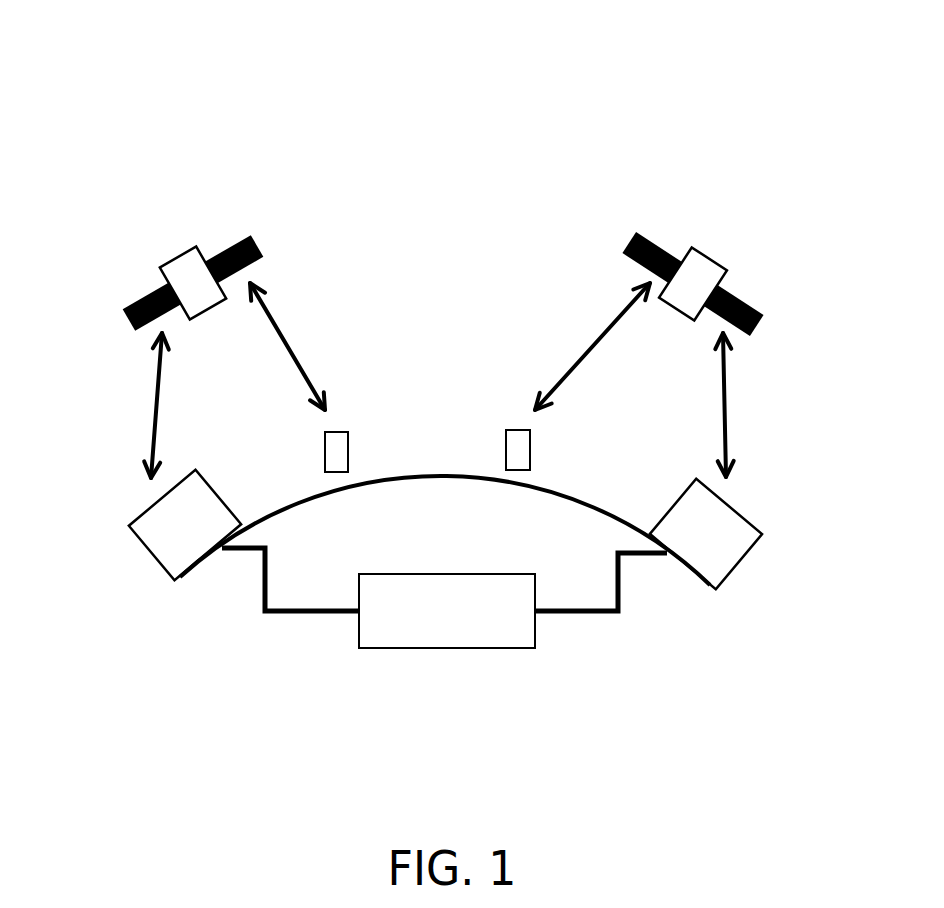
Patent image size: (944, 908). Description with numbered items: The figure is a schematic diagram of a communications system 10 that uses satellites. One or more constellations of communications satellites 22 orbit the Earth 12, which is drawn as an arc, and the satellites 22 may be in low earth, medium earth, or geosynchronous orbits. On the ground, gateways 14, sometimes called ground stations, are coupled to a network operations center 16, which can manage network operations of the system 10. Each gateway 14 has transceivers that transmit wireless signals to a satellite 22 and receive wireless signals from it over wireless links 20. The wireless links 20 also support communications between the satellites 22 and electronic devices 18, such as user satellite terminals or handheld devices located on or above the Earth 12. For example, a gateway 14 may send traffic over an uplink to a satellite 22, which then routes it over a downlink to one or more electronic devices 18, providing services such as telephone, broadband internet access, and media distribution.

The communications system 10 is at (395, 102).
The Earth 12 is at (286, 505).
The gateway 14 is at (150, 552).
The network operations center 16 is at (510, 645).
The electronic device 18 is at (337, 473).
The wireless link 20 is at (294, 361).
The communications satellite 22 is at (180, 257).